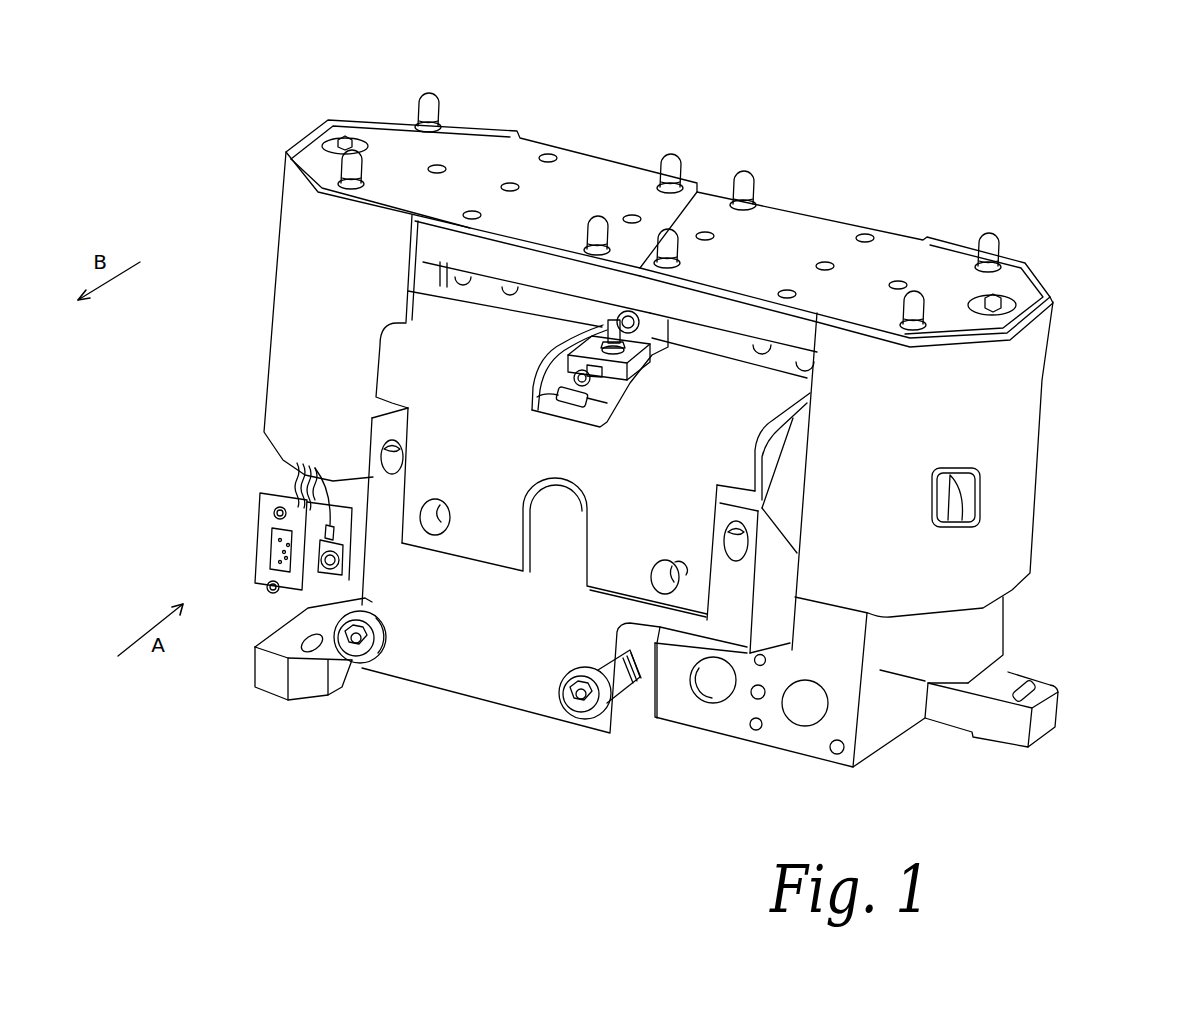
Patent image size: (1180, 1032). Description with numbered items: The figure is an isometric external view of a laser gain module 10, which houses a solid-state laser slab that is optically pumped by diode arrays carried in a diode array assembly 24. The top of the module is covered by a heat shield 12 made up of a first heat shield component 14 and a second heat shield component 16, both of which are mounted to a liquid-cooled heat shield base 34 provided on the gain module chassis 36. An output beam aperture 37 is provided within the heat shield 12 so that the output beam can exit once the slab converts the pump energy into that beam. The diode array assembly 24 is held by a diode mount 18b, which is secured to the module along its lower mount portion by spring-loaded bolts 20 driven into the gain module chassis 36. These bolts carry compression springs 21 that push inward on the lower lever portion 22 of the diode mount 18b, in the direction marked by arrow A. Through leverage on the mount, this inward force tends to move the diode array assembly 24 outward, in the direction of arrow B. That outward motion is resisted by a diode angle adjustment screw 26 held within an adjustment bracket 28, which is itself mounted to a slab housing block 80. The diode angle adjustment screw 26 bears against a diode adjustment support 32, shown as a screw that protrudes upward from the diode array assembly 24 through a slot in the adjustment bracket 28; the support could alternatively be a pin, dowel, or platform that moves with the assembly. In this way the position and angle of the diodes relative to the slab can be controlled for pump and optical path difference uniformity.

The laser gain module 10 is at (1080, 179).
The heat shield 12 is at (535, 108).
The first heat shield component 14 is at (612, 176).
The second heat shield component 16 is at (940, 256).
The diode mount 18b is at (755, 632).
The spring-loaded bolts 20 is at (370, 652).
The compression springs 21 is at (635, 675).
The lower lever portion 22 is at (470, 687).
The diode array assembly 24 is at (793, 480).
The diode angle adjustment screw 26 is at (630, 382).
The adjustment bracket 28 is at (642, 346).
The diode adjustment support 32 is at (602, 327).
The liquid-cooled heat shield base 34 is at (737, 315).
The gain module chassis 36 is at (877, 735).
The output beam aperture 37 is at (968, 493).
The slab housing block 80 is at (455, 283).